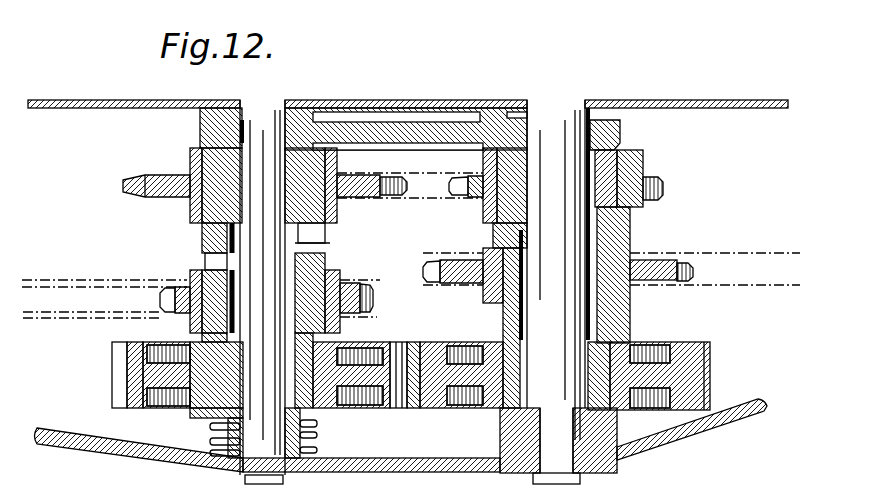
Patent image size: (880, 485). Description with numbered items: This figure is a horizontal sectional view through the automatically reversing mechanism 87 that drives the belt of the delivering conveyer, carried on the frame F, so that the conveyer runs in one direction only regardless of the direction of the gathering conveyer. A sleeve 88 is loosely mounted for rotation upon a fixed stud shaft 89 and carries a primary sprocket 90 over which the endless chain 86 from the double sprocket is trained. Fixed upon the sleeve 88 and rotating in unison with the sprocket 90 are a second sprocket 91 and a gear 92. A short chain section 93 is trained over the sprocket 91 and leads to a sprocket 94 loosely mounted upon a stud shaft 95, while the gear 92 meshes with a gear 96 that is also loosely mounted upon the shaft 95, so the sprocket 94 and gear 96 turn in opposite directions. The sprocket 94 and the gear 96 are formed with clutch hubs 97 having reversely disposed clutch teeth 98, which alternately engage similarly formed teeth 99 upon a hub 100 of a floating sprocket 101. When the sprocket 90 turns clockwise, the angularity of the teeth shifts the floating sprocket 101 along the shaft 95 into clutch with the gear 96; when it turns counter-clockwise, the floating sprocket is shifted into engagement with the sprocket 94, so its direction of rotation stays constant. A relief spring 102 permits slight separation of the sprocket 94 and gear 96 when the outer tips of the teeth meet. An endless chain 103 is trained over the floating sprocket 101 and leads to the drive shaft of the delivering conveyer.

The frame F is at (50, 100).
The endless chain 86 is at (730, 258).
The automatically reversing mechanism 87 is at (665, 462).
The sleeve 88 is at (627, 152).
The fixed stud shaft 89 is at (560, 127).
The sprocket 90 is at (667, 262).
The second sprocket 91 is at (663, 180).
The gear 92 is at (687, 367).
The short chain section 93 is at (427, 181).
The sprocket 94 is at (368, 177).
The stud shaft 95 is at (267, 120).
The gear 96 is at (393, 343).
The clutch hubs 97 is at (313, 203).
The clutch teeth 98 is at (328, 243).
The teeth 99 is at (210, 262).
The hub 100 is at (190, 272).
The floating sprocket 101 is at (172, 297).
The relief spring 102 is at (317, 435).
The endless chain 103 is at (23, 280).